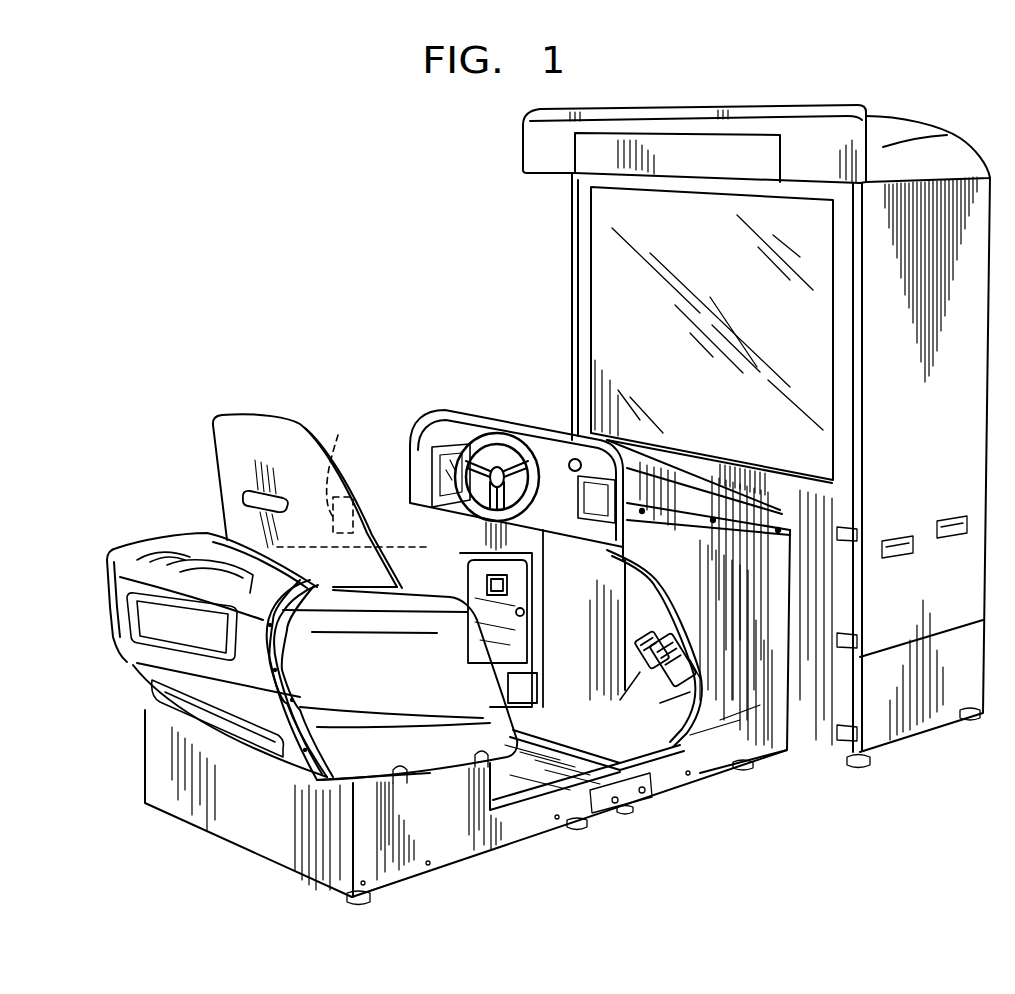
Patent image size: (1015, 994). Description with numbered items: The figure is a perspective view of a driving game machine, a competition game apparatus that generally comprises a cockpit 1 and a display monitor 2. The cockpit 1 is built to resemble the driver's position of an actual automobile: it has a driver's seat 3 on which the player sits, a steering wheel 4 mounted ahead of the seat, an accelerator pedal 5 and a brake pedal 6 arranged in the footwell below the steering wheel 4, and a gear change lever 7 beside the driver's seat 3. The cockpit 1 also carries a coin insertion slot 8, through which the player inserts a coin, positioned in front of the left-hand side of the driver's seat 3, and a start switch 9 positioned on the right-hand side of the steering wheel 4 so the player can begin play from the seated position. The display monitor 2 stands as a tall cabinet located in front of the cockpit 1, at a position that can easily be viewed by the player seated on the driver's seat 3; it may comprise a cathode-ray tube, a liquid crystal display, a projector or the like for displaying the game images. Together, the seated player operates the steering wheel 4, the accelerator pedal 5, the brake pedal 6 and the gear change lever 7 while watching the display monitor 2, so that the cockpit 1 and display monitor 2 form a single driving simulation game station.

The cockpit 1 is at (392, 442).
The display monitor 2 is at (607, 253).
The driver's seat 3 is at (230, 463).
The steering wheel 4 is at (503, 427).
The accelerator pedal 5 is at (668, 690).
The brake pedal 6 is at (645, 672).
The gear change lever 7 is at (353, 475).
The coin insertion slot 8 is at (487, 580).
The start switch 9 is at (573, 458).